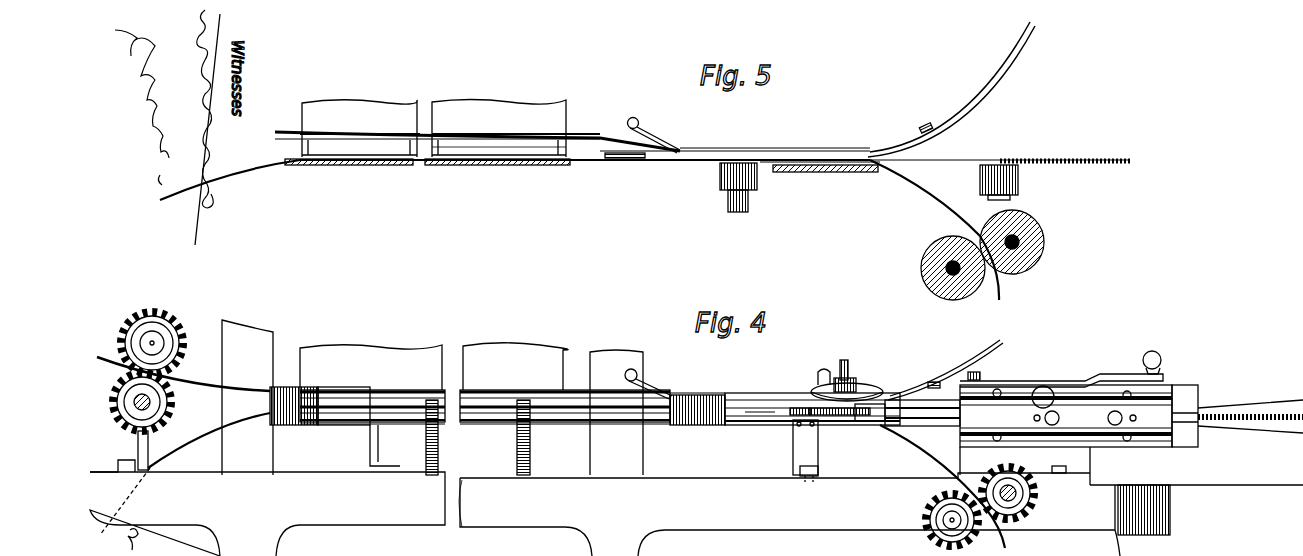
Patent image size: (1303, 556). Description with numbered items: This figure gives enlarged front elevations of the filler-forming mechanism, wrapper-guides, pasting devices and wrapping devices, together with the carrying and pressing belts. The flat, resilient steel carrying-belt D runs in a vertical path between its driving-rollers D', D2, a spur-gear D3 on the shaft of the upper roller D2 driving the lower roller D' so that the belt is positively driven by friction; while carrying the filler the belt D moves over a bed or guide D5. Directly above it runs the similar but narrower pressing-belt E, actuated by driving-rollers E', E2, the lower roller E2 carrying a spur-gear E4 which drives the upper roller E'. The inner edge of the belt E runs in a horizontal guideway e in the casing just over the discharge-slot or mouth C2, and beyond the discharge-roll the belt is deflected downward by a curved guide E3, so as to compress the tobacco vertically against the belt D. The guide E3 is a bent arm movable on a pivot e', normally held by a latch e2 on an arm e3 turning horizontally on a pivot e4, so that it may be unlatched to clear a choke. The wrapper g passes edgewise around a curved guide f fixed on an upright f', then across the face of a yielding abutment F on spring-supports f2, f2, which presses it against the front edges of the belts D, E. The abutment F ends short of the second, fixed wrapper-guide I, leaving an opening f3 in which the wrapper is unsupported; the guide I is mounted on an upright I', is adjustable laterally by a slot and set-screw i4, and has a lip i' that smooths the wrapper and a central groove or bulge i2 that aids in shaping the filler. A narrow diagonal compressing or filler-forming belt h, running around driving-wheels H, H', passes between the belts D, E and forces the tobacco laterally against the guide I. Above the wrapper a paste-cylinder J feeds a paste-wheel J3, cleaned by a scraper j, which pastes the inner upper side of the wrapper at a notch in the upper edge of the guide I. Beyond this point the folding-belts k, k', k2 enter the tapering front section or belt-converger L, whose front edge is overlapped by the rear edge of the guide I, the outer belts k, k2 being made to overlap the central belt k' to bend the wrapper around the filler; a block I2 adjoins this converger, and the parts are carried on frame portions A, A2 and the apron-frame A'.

In FIG. 4, the frame standard A is at (432, 397).
In FIG. 4, the apron-frame A' is at (696, 512).
In FIG. 5, the frame block A2 is at (470, 121).
In FIG. 4, the frame block A2 is at (412, 372).
In FIG. 5, the discharge-slot or mouth C2 is at (499, 146).
In FIG. 5, the carrying-belt D is at (579, 230).
In FIG. 4, the carrying-belt D is at (576, 480).
In FIG. 5, the lower driving-roller D' is at (940, 268).
In FIG. 5, the upper driving-roller D2 is at (1027, 242).
In FIG. 4, the spur-gear D3 is at (996, 506).
In FIG. 5, the bed or guide D5 is at (465, 165).
In FIG. 5, the pressing-belt E is at (661, 86).
In FIG. 4, the pressing-belt E is at (183, 357).
In FIG. 4, the upper driving-roller E' is at (163, 339).
In FIG. 4, the lower driving-roller E2 is at (120, 420).
In FIG. 5, the curved guide E3 is at (737, 149).
In FIG. 4, the curved guide E3 is at (676, 392).
In FIG. 4, the spur-gear E4 is at (170, 400).
In FIG. 5, the horizontal guideway e is at (450, 124).
In FIG. 5, the pivot e' is at (654, 128).
In FIG. 4, the pivot e' is at (638, 382).
In FIG. 5, the latch e2 is at (922, 120).
In FIG. 4, the latch e2 is at (933, 381).
In FIG. 4, the arm e3 is at (1100, 374).
In FIG. 4, the pivot e4 is at (982, 376).
In FIG. 4, the yielding abutment F is at (485, 406).
In FIG. 4, the curved guide f is at (320, 406).
In FIG. 4, the upright f' is at (373, 445).
In FIG. 4, the spring-supports f2 is at (488, 437).
In FIG. 4, the space or opening f3 is at (697, 398).
In FIG. 4, the wrapper g is at (484, 426).
In FIG. 5, the driving-wheel H is at (1000, 180).
In FIG. 5, the driving-wheel H' is at (721, 187).
In FIG. 5, the diagonal compressing or filler-forming belt h is at (793, 168).
In FIG. 4, the fixed or second wrapper-guide I is at (812, 401).
In FIG. 4, the upright I' is at (805, 447).
In FIG. 4, the slide plate I2 is at (1064, 443).
In FIG. 4, the lip or projection i' is at (1085, 418).
In FIG. 4, the central longitudinal groove or outward bulge i2 is at (760, 414).
In FIG. 4, the slot and set-screw i4 is at (820, 470).
In FIG. 4, the paste-cylinder J is at (848, 360).
In FIG. 4, the paste-wheel J3 is at (870, 382).
In FIG. 4, the scraper j is at (820, 370).
In FIG. 4, the folding-belt k is at (1056, 420).
In FIG. 4, the central folding-belt k' is at (1021, 429).
In FIG. 4, the folding-belt k2 is at (874, 428).
In FIG. 4, the first or front section (belt-converger) L is at (922, 413).